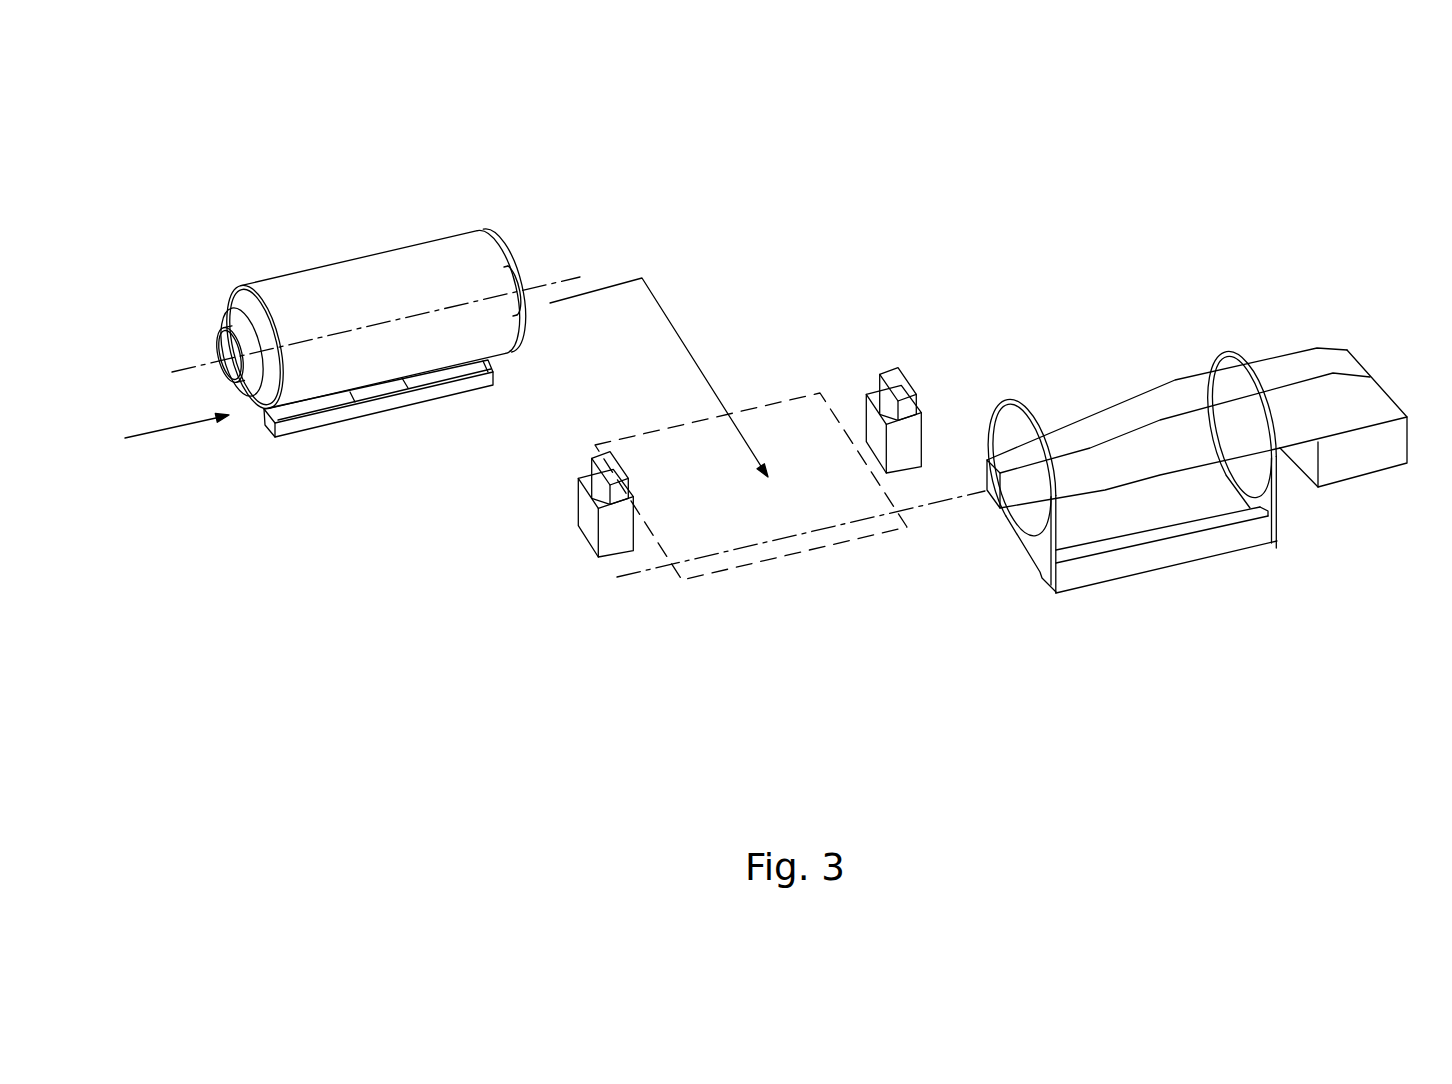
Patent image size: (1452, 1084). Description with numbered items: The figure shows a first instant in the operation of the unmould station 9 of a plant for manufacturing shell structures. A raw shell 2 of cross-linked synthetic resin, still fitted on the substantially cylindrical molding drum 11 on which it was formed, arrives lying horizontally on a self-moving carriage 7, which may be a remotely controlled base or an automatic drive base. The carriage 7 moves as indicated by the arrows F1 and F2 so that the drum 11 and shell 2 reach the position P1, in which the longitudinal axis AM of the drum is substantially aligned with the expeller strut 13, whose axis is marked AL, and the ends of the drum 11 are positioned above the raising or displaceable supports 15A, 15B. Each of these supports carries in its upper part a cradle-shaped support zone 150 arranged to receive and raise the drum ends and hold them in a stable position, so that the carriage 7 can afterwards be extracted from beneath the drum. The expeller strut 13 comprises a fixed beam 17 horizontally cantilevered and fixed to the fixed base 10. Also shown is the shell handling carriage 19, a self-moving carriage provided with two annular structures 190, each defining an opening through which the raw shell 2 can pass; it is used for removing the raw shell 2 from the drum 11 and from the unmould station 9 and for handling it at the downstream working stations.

The raw shell 2 is at (347, 283).
The molding drum 11 is at (235, 322).
The self-moving carriage 7 is at (340, 415).
The arrow F1 is at (173, 427).
The longitudinal axis of the drum AM is at (562, 278).
The arrow F2 is at (657, 298).
The unmould station 9 is at (836, 258).
The position P1 is at (697, 542).
The reference axis AL is at (808, 533).
The raising support 15A is at (620, 555).
The raising support 15B is at (909, 472).
The cradle-shaped support zone 150 is at (608, 462).
The shell handling carriage 19 is at (1108, 568).
The annular structure 190 is at (1011, 398).
The expeller strut 13 is at (1178, 388).
The fixed beam 17 is at (1263, 365).
The fixed base 10 is at (1362, 452).